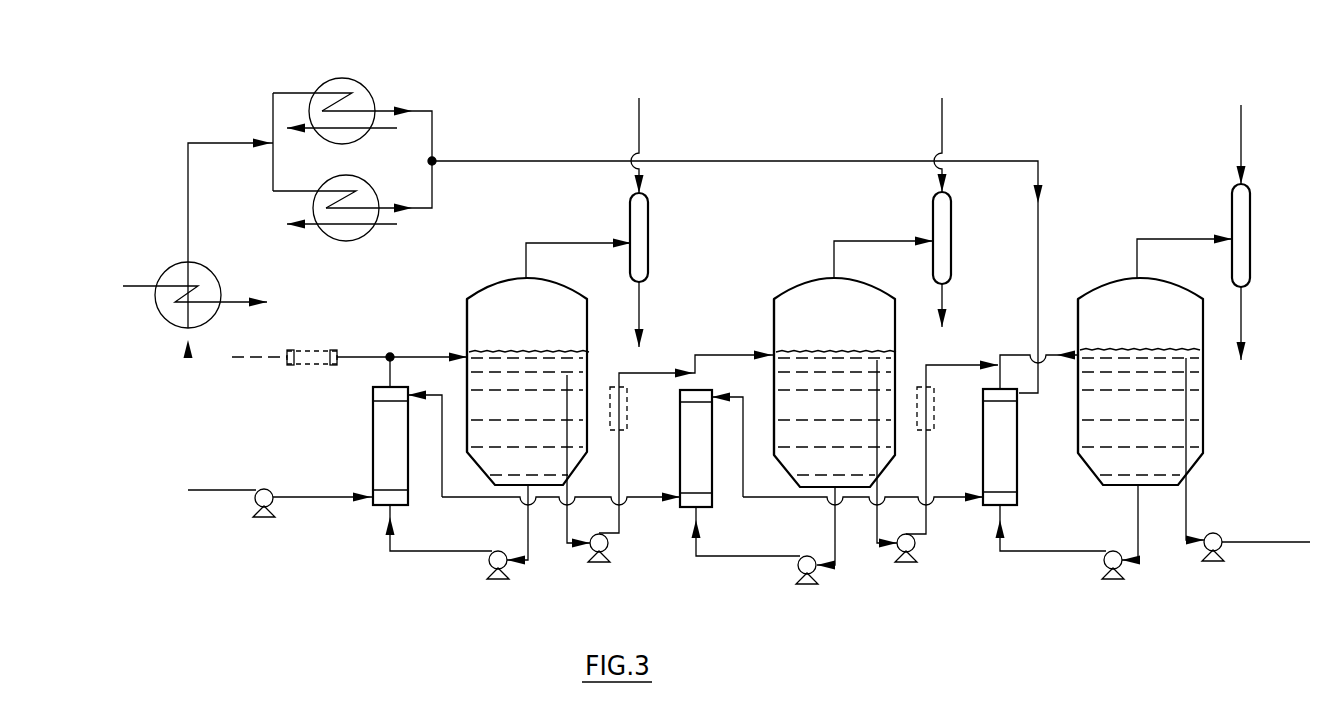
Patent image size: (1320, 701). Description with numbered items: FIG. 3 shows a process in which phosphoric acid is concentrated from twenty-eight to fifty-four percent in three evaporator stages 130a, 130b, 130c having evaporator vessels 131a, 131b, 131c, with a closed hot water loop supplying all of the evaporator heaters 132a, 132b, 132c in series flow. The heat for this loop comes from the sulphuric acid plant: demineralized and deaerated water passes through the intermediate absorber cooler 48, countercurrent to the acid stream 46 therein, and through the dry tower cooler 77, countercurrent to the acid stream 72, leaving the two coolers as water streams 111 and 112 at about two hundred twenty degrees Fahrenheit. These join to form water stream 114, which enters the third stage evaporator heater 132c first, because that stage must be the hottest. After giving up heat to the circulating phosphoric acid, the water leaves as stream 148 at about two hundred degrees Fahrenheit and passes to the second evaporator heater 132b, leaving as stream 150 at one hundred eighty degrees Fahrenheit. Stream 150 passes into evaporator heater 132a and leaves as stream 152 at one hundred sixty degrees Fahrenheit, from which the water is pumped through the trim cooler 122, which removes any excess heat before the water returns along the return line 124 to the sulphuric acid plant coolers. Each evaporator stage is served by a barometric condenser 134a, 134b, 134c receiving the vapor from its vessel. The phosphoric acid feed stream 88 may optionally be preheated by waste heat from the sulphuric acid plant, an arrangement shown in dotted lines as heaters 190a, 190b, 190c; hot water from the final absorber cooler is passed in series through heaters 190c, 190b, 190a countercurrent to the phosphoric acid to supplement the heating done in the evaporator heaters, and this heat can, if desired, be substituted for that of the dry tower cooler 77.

The intermediate absorber cooler 48 is at (362, 88).
The acid stream 46 is at (379, 128).
The dry tower cooler 77 is at (372, 182).
The acid stream 72 is at (377, 235).
The water stream 111 is at (432, 111).
The water stream 112 is at (432, 210).
The water stream 114 is at (553, 161).
The line 124 is at (197, 143).
The trim cooler 122 is at (245, 272).
The phosphoric acid feed stream 88 is at (282, 356).
The heater 190a is at (310, 350).
The heater 190b is at (627, 422).
The heater 190c is at (950, 398).
The evaporator stage 130a is at (474, 284).
The evaporator stage 130b is at (809, 272).
The evaporator stage 130c is at (1095, 272).
The evaporator vessel 131a is at (467, 338).
The evaporator vessel 131b is at (774, 317).
The evaporator vessel 131c is at (1078, 325).
The evaporator heater 132a is at (373, 447).
The evaporator heater 132b is at (680, 436).
The evaporator heater 132c is at (983, 473).
The barometric condenser 134a is at (649, 228).
The barometric condenser 134b is at (952, 233).
The barometric condenser 134c is at (1250, 222).
The water stream 148 is at (740, 473).
The water stream 150 is at (632, 503).
The water stream 152 is at (328, 498).